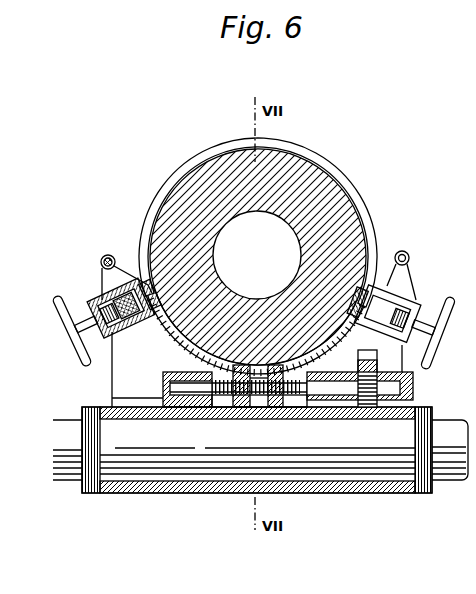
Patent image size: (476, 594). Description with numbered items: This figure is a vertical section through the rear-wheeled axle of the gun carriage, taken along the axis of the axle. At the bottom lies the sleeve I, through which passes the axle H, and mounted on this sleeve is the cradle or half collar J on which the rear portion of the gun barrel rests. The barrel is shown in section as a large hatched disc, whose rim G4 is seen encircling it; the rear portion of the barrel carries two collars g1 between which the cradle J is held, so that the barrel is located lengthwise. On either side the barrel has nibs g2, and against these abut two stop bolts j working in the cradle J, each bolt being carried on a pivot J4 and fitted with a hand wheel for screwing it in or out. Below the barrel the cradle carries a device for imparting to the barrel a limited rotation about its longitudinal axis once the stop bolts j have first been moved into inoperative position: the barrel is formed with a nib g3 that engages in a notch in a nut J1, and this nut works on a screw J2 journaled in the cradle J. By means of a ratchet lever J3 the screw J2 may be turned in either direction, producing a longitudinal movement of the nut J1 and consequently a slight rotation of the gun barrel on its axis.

The rim ring of the wheel G4 is at (326, 188).
The collars g1 is at (170, 190).
The nibs g2 is at (428, 287).
The nib g3 is at (258, 408).
The stop bolts j is at (143, 296).
The cradle or half collar J is at (160, 350).
The nut J1 is at (244, 415).
The screw J2 is at (330, 402).
The ratchet lever J3 is at (376, 360).
The pivot pin J4 is at (108, 280).
The axle H is at (160, 468).
The sleeve I is at (212, 487).